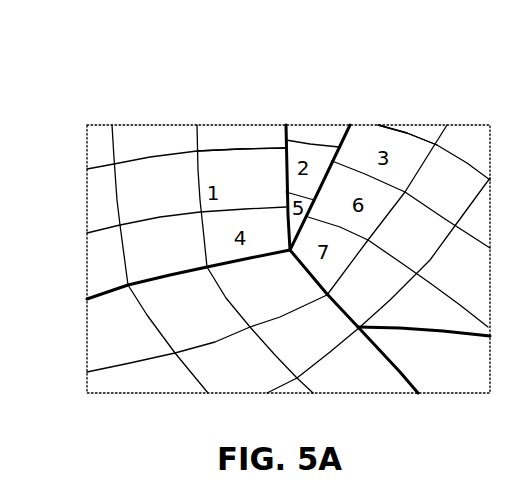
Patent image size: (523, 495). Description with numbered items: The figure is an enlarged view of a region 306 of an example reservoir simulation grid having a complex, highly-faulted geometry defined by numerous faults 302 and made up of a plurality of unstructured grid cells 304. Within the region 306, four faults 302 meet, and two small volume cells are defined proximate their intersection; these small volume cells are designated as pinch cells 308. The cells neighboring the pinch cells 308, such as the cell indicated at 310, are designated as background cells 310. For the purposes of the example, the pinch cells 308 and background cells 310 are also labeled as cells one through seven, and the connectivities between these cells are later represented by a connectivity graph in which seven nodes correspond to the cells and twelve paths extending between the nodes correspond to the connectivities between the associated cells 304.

The faults 302 is at (205, 265).
The unstructured grid cells 304 is at (172, 198).
The region 306 is at (133, 125).
The pinch cells 308 is at (335, 143).
The background cells 310 is at (237, 148).